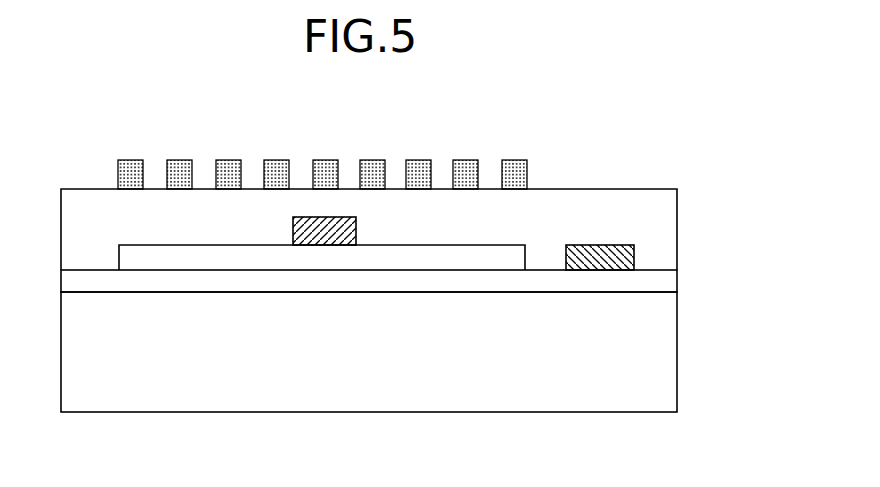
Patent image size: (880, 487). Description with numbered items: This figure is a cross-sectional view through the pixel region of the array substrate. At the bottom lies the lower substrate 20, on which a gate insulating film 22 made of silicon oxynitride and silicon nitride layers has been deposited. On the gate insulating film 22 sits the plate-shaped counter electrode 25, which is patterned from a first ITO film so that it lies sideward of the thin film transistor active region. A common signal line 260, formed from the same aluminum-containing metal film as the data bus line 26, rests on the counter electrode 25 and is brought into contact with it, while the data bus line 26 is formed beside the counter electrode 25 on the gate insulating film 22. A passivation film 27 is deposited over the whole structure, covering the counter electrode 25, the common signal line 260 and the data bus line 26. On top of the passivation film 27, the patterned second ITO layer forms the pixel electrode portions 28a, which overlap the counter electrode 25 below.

The lower substrate 20 is at (659, 356).
The gate insulating film 22 is at (659, 281).
The counter electrode 25 is at (448, 257).
The data bus line 26 is at (595, 258).
The passivation film 27 is at (659, 234).
The common signal line 260 is at (324, 246).
The array of bump electrodes 28a is at (513, 153).